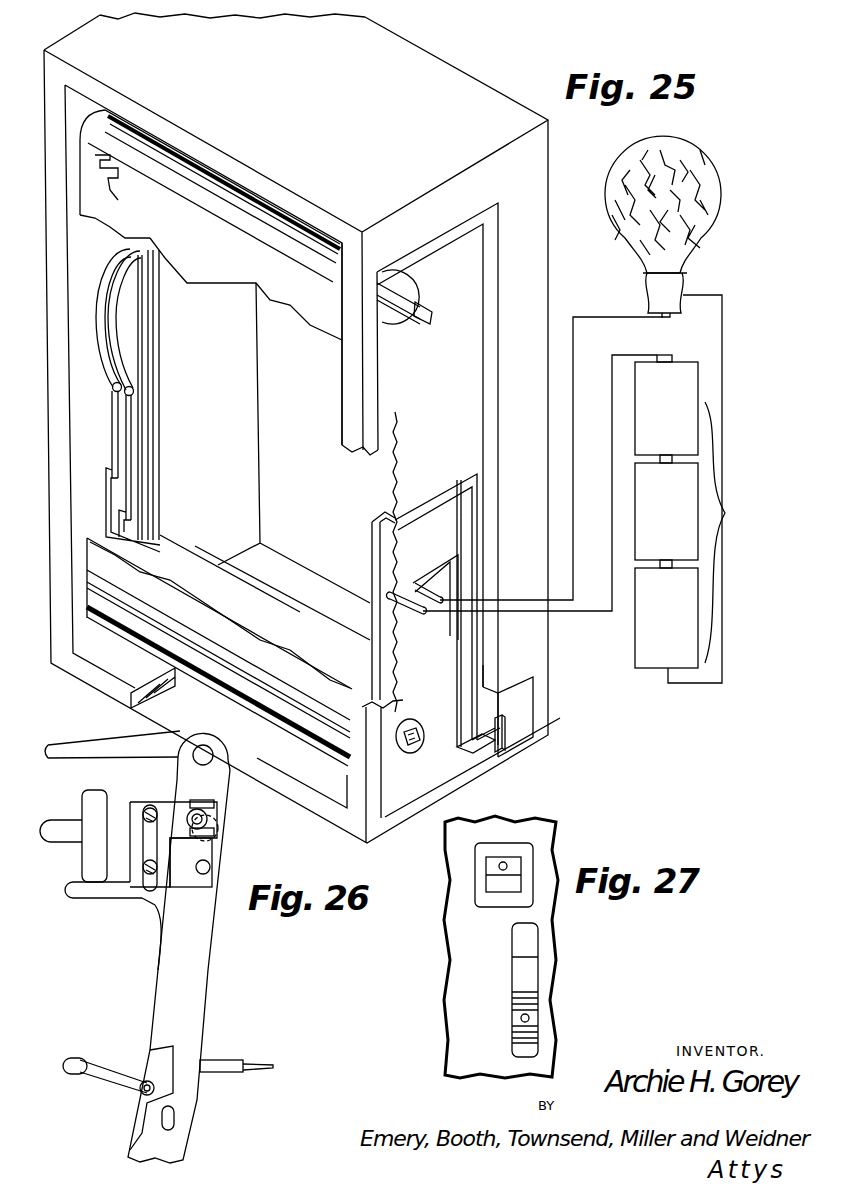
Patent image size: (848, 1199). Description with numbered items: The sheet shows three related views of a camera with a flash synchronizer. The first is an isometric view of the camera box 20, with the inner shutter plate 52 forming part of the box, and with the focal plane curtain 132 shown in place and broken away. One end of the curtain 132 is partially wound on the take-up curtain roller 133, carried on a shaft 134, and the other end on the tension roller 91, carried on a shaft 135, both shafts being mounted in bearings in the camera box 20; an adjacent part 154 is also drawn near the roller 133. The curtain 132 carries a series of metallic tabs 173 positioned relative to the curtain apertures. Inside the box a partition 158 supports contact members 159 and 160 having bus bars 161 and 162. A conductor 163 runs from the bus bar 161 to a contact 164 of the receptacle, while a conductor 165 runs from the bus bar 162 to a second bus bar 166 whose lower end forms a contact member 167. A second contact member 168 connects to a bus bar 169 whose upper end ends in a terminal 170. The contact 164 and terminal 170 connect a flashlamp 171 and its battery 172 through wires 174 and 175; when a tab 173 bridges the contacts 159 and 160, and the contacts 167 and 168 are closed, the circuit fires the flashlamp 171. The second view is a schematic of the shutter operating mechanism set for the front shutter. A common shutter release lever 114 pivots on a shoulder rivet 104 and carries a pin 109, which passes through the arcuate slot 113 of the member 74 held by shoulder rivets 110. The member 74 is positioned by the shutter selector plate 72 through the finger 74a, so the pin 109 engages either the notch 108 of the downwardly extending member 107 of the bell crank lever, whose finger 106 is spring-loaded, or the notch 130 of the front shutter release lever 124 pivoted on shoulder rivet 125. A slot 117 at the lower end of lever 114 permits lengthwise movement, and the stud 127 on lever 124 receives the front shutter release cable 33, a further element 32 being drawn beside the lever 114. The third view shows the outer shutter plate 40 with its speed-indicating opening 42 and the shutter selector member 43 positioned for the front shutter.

In FIG. 25, the camera box 20 is at (548, 160).
In FIG. 26, the rod 32 is at (232, 1058).
In FIG. 26, the front shutter release cable 33 is at (100, 1068).
In FIG. 27, the outer shutter plate 40 is at (548, 965).
In FIG. 27, the opening 42 is at (525, 852).
In FIG. 27, the shutter selector member 43 is at (535, 1018).
In FIG. 25, the inner shutter plate 52 is at (390, 389).
In FIG. 26, the shutter selector plate 72 is at (82, 865).
In FIG. 26, the member 74 is at (140, 915).
In FIG. 26, the finger 74a is at (88, 895).
In FIG. 25, the tension roller 91 is at (420, 722).
In FIG. 26, the shoulder rivet 104 is at (212, 752).
In FIG. 26, the finger 106 is at (105, 744).
In FIG. 26, the downwardly extending member 107 is at (214, 804).
In FIG. 26, the notch 108 is at (207, 819).
In FIG. 26, the pin 109 is at (214, 832).
In FIG. 26, the shoulder rivets 110 is at (150, 808).
In FIG. 26, the arcuate transversely extending slot 113 is at (60, 828).
In FIG. 26, the common shutter release lever 114 is at (208, 972).
In FIG. 26, the elongated opening or slot 117 is at (174, 1118).
In FIG. 26, the front shutter release lever 124 is at (148, 1058).
In FIG. 26, the shoulder rivet 125 is at (203, 875).
In FIG. 26, the stud 127 is at (142, 1095).
In FIG. 26, the notch 130 is at (214, 838).
In FIG. 25, the curtain 132 is at (207, 262).
In FIG. 25, the take-up curtain roller 133 is at (418, 277).
In FIG. 25, the shaft 134 is at (424, 320).
In FIG. 25, the shaft 135 is at (414, 748).
In FIG. 25, the shaft 154 is at (418, 297).
In FIG. 25, the partition 158 is at (159, 436).
In FIG. 25, the contact member 159 is at (97, 315).
In FIG. 25, the contact member 160 is at (110, 332).
In FIG. 25, the bus bar 161 is at (118, 428).
In FIG. 25, the bus bar 162 is at (145, 487).
In FIG. 25, the conductor 163 is at (396, 653).
In FIG. 25, the contact 164 is at (415, 612).
In FIG. 25, the conductor 165 is at (290, 613).
In FIG. 25, the second bus bar 166 is at (437, 498).
In FIG. 25, the contact member 167 is at (503, 752).
In FIG. 25, the second contact member 168 is at (535, 708).
In FIG. 25, the bus bar 169 is at (457, 690).
In FIG. 25, the terminal 170 is at (432, 575).
In FIG. 25, the flashlamp 171 is at (715, 210).
In FIG. 25, the battery 172 is at (707, 489).
In FIG. 25, the metallic tabs 173 is at (104, 180).
In FIG. 25, the wire 174 is at (578, 438).
In FIG. 25, the wire 175 is at (612, 509).